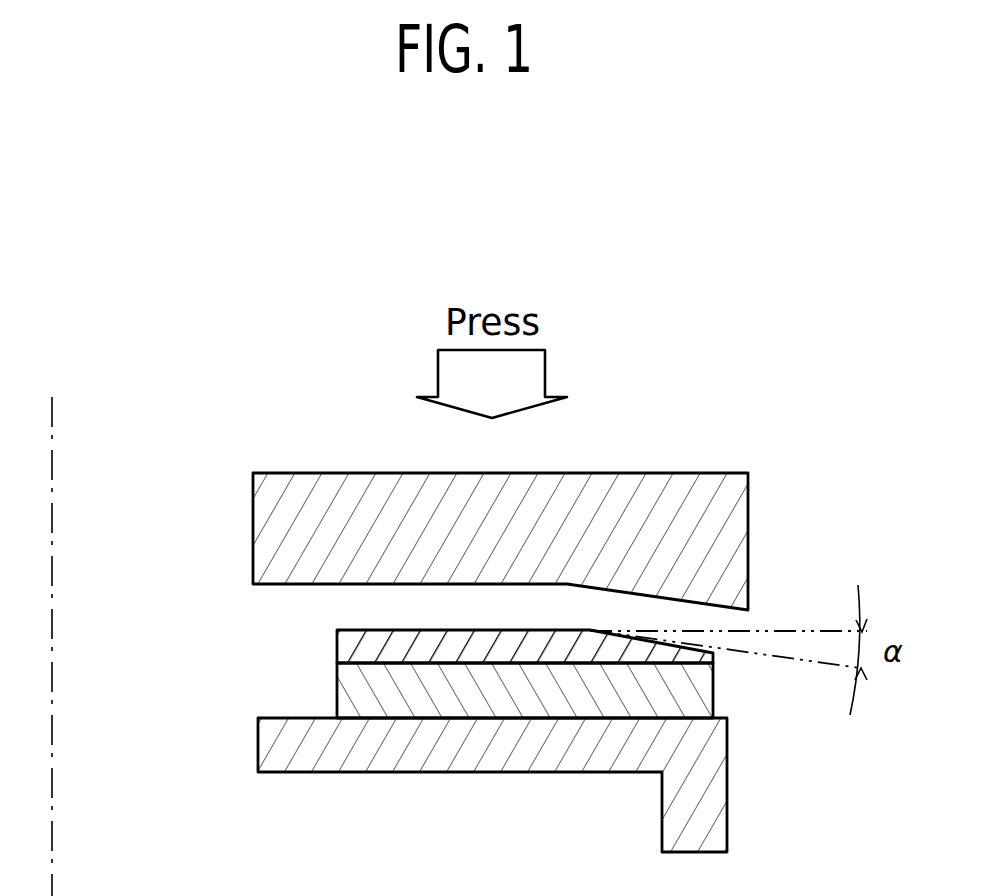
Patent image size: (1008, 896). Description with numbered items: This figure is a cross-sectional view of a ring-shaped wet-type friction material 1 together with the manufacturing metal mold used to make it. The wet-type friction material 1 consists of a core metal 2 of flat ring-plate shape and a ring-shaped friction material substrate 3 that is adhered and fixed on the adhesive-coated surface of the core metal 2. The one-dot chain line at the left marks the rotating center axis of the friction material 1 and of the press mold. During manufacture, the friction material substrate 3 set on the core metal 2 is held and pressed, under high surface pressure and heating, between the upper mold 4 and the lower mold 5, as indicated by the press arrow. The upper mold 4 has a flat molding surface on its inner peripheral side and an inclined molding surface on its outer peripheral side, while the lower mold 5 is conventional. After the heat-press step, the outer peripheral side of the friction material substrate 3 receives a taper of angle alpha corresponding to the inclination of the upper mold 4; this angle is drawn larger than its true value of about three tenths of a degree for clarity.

The wet-type friction material 1 is at (399, 638).
The core metal 2 is at (335, 698).
The friction material substrate 3 is at (335, 645).
The upper mold 4 is at (256, 523).
The lower mold 5 is at (268, 745).